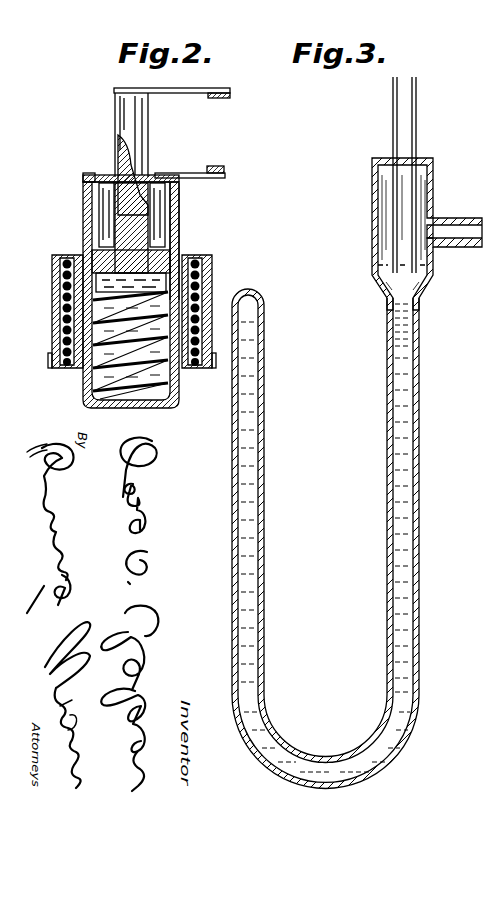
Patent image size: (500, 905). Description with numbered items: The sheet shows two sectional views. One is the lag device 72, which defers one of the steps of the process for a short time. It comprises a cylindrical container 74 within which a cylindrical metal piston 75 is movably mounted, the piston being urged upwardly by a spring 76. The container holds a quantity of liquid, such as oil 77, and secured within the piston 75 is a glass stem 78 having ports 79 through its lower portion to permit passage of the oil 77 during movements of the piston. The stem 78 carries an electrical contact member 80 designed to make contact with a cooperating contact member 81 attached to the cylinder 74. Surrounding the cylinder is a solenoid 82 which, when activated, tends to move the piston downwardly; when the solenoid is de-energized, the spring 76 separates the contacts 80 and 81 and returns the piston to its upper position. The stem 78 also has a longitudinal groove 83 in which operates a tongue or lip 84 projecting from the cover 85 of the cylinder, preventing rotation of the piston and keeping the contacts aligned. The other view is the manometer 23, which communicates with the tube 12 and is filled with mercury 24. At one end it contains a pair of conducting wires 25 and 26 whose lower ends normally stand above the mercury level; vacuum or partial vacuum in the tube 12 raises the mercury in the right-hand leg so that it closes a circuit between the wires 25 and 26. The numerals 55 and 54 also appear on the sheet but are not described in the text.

In FIG. 2, the electrical contact member 80 is at (212, 97).
In FIG. 2, the glass stem 78 is at (137, 175).
In FIG. 2, the longitudinal groove 83 is at (118, 145).
In FIG. 2, the cooperating contact member 81 is at (224, 169).
In FIG. 2, the tongue or lip 84 is at (117, 176).
In FIG. 2, the cover 85 is at (85, 177).
In FIG. 2, the lag device 72 is at (80, 197).
In FIG. 2, the cylindrical container 74 is at (180, 214).
In FIG. 2, the cylindrical metal piston 75 is at (166, 241).
In FIG. 2, the ports 79 is at (96, 259).
In FIG. 2, the oil 77 is at (166, 249).
In FIG. 2, the spring 76 is at (112, 381).
In FIG. 2, the solenoid 82 is at (66, 312).
In FIG. 3, the conducting wire 25 is at (393, 105).
In FIG. 3, the conducting wire 26 is at (416, 111).
In FIG. 3, the tube 12 is at (456, 218).
In FIG. 3, the manometer 23 is at (385, 369).
In FIG. 3, the mercury 24 is at (398, 450).
In FIG. 3, the lead 55 is at (499, 433).
In FIG. 3, the lead 54 is at (499, 529).